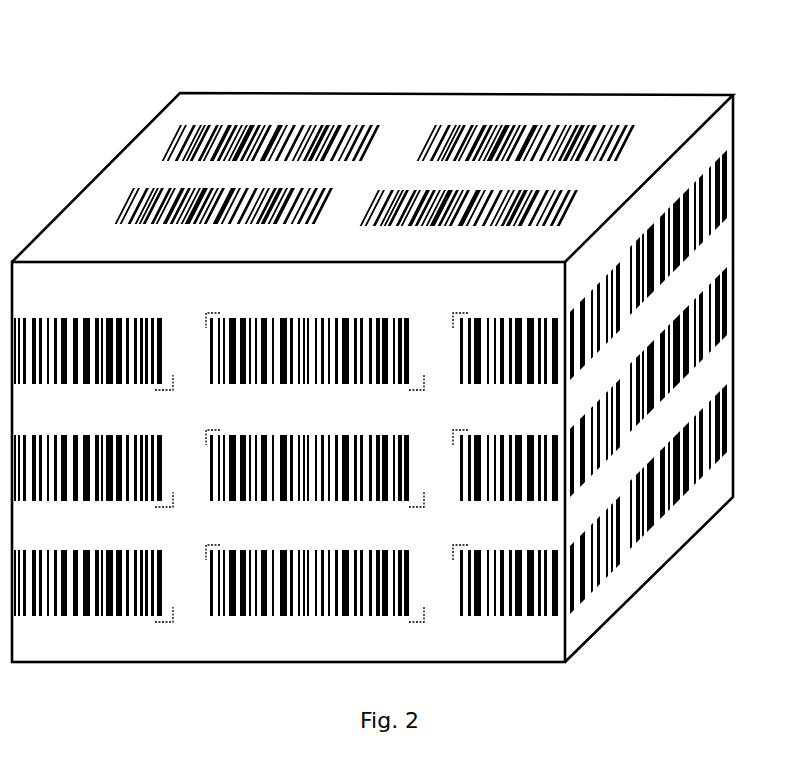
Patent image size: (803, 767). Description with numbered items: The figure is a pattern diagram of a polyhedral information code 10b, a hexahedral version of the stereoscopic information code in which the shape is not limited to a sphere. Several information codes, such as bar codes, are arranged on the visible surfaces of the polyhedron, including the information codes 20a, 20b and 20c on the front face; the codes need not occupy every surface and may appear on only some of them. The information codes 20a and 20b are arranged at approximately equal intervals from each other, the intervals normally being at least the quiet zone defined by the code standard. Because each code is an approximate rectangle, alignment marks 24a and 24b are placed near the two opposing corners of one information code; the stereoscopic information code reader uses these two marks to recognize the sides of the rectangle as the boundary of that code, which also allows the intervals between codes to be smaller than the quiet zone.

The polyhedral information code 10b is at (653, 108).
The information code 20a is at (296, 434).
The information code 20b is at (537, 500).
The information code 20c is at (540, 612).
The alignment mark 24a is at (212, 426).
The alignment mark 24b is at (423, 508).